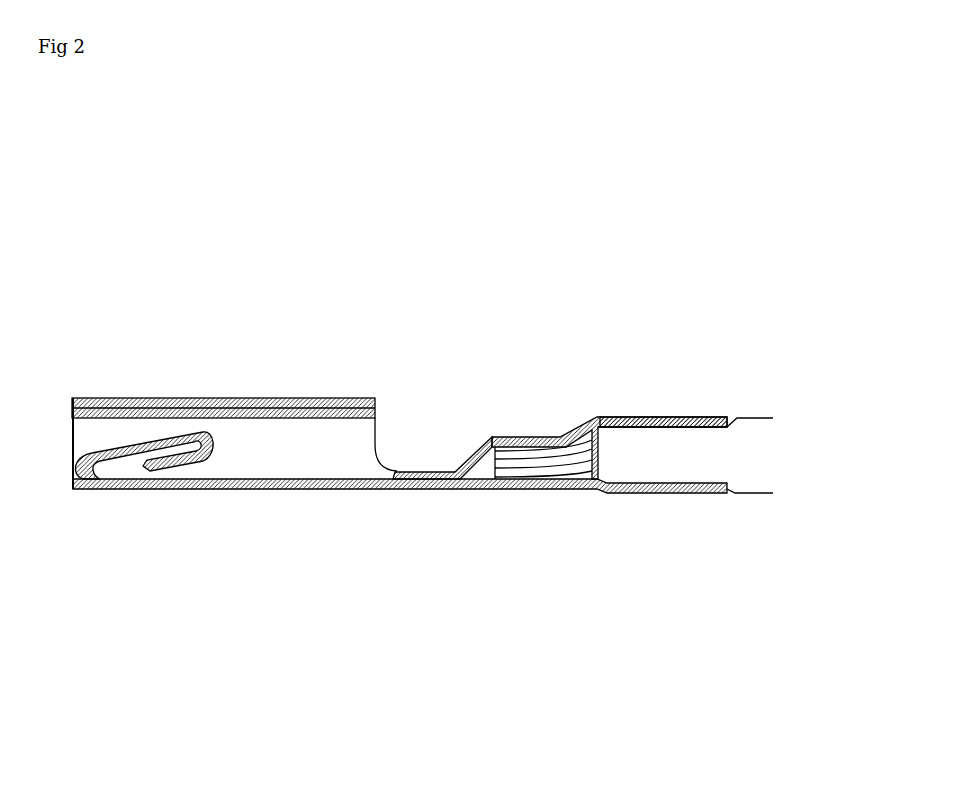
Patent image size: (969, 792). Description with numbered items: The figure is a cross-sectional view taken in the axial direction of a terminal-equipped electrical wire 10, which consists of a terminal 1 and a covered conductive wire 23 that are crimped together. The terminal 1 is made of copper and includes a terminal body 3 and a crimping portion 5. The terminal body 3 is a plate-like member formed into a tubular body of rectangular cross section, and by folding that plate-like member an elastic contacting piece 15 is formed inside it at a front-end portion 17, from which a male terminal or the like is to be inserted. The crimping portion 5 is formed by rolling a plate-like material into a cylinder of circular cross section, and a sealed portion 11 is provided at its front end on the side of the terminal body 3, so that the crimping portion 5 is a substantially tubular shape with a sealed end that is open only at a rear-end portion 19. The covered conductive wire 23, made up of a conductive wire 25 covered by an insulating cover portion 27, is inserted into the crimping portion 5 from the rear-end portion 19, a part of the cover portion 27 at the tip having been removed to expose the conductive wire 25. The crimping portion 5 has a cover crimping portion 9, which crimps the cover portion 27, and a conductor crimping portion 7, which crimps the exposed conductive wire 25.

The terminal 1 is at (245, 395).
The terminal body 3 is at (283, 490).
The crimping portion 5 is at (480, 657).
The conductor crimping portion 7 is at (532, 490).
The cover crimping portion 9 is at (630, 493).
The terminal-equipped electrical wire 10 is at (377, 239).
The sealed portion 11 is at (423, 476).
The elastic contacting piece 15 is at (132, 452).
The front-end portion 17 is at (72, 418).
The rear-end portion 19 is at (729, 491).
The covered conductive wire 23 is at (727, 402).
The conductive wire 25 is at (542, 462).
The cover portion 27 is at (683, 442).